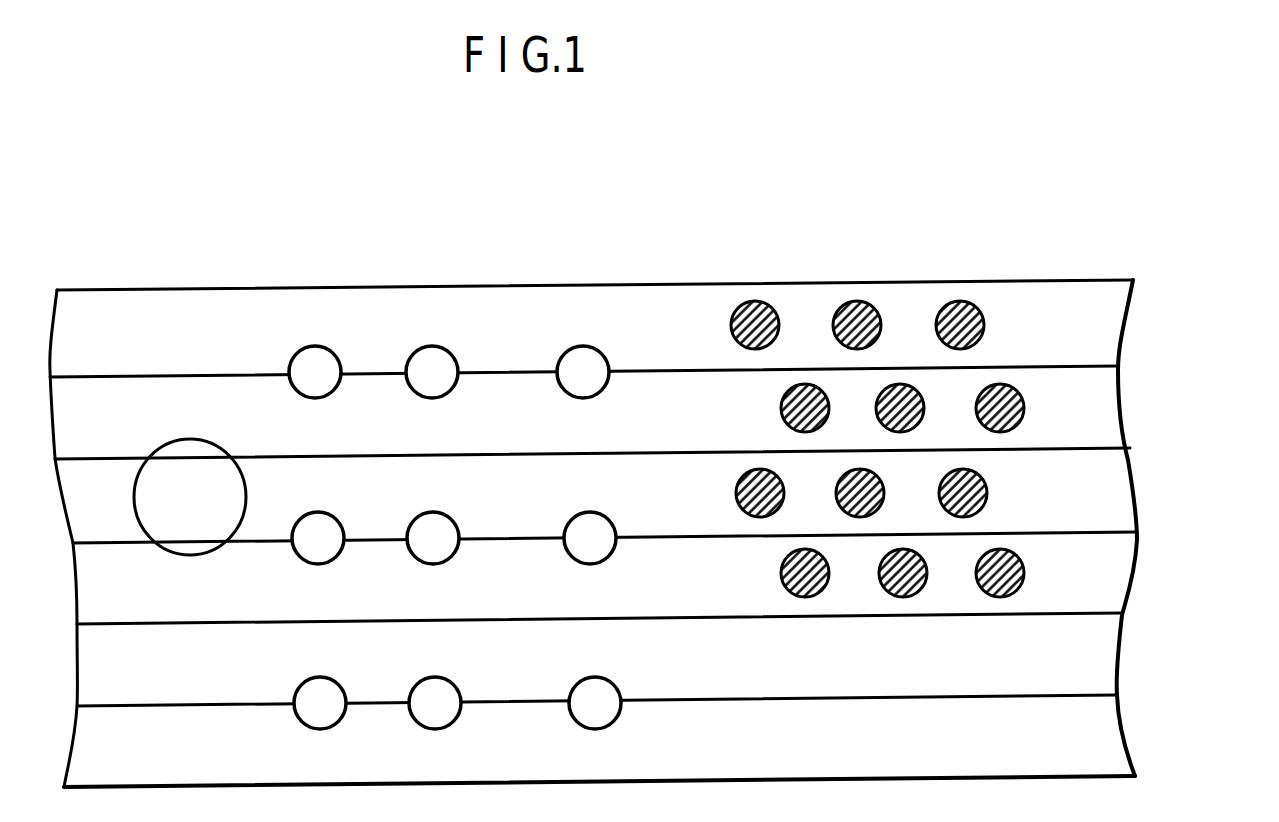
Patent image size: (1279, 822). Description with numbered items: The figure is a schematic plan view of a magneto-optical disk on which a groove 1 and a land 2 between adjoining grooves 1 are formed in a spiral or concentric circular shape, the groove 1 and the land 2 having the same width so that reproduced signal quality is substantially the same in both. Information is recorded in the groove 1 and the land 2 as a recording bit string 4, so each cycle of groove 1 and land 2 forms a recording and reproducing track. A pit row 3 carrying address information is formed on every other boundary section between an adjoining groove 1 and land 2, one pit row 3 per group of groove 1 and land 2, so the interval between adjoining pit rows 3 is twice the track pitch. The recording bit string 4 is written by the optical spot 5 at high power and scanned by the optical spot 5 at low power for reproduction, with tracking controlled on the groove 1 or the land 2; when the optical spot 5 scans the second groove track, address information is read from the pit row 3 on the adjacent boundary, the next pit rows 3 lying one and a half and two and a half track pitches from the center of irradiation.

The groove 1 is at (1108, 340).
The land 2 is at (1106, 425).
The pit row 3 is at (565, 352).
The recording bit string 4 is at (773, 307).
The optical spot 5 is at (205, 442).